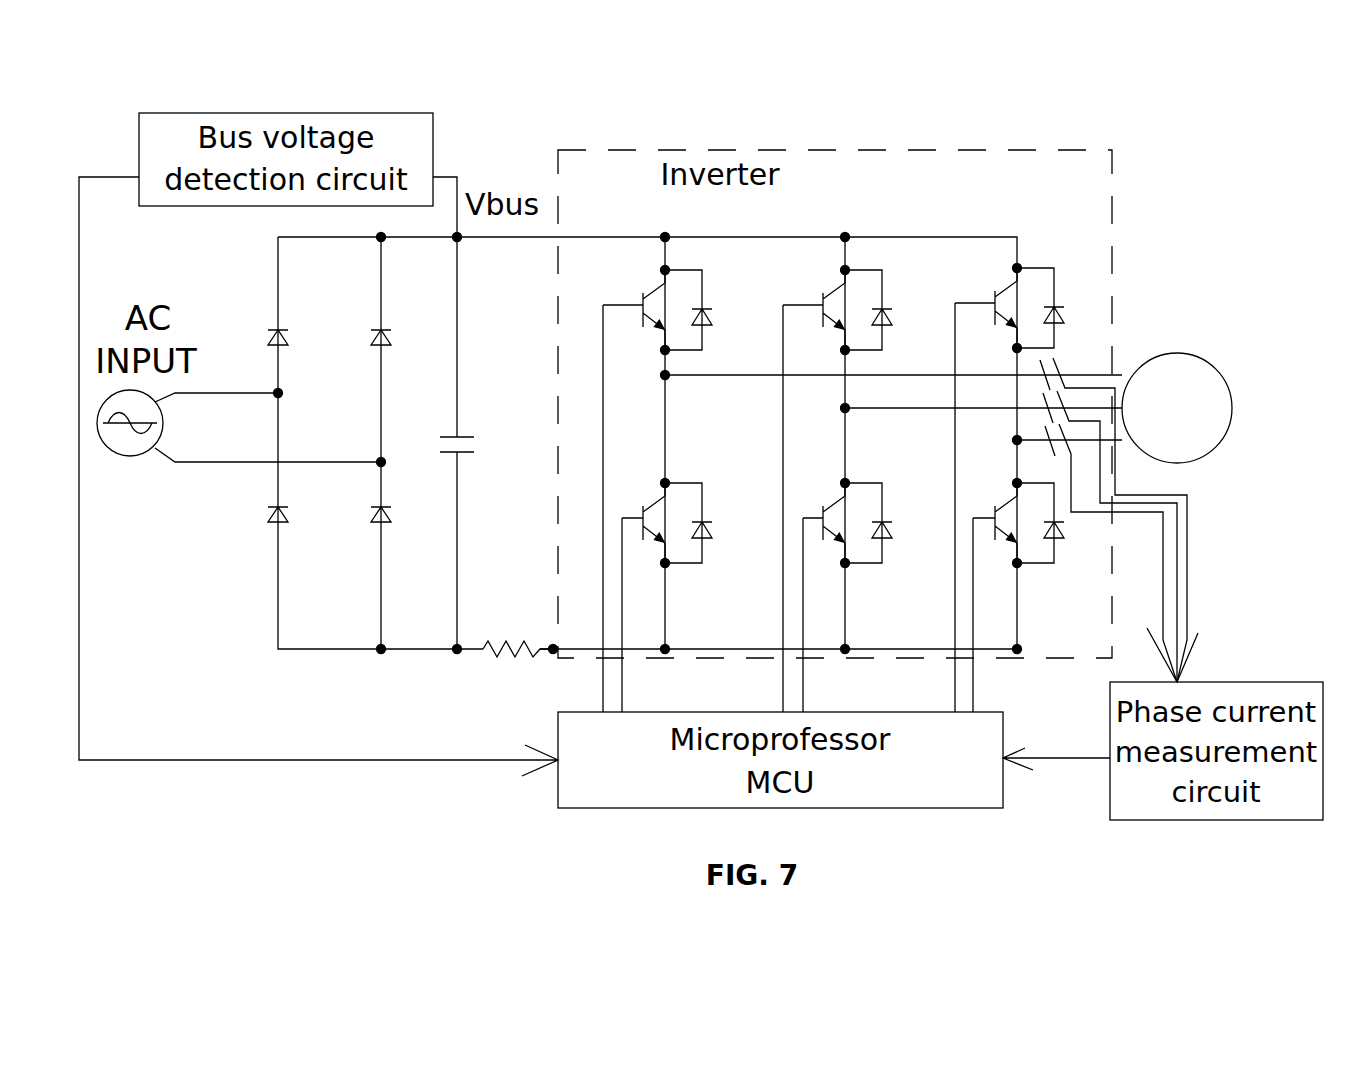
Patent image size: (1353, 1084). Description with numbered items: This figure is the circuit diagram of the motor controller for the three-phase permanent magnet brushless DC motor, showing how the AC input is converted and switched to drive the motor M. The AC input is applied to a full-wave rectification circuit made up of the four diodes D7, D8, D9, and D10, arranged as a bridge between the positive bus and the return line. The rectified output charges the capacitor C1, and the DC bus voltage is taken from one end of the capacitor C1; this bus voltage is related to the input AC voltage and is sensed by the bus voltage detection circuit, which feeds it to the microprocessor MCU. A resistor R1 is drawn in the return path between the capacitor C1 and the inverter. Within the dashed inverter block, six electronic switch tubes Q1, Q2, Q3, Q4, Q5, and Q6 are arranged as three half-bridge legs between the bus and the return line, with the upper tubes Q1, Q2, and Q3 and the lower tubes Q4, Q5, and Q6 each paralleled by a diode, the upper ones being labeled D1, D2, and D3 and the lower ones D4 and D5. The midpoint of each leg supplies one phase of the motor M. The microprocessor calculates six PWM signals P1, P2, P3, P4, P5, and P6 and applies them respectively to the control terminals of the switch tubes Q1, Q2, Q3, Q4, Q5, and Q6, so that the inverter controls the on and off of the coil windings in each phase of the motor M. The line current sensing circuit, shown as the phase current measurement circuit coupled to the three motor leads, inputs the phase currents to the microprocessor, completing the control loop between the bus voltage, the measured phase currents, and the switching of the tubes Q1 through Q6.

The electronic switch tube Q1 is at (634, 302).
The electronic switch tube Q2 is at (812, 302).
The electronic switch tube Q3 is at (986, 301).
The electronic switch tube Q4 is at (636, 516).
The electronic switch tube Q5 is at (812, 515).
The electronic switch tube Q6 is at (1014, 514).
The freewheeling diode D1 is at (709, 310).
The freewheeling diode D2 is at (888, 310).
The freewheeling diode D3 is at (1059, 308).
The freewheeling diode D4 is at (709, 523).
The freewheeling diode D5 is at (888, 523).
The diode D7 is at (257, 357).
The diode D8 is at (359, 357).
The diode D9 is at (255, 533).
The diode D10 is at (351, 533).
The capacitor C1 is at (475, 443).
The resistor R1 is at (518, 626).
The PWM signal P1 is at (582, 508).
The PWM signal P2 is at (648, 615).
The PWM signal P3 is at (761, 508).
The PWM signal P4 is at (826, 615).
The PWM signal P5 is at (931, 507).
The PWM signal P6 is at (1000, 615).
The motor M is at (1177, 408).